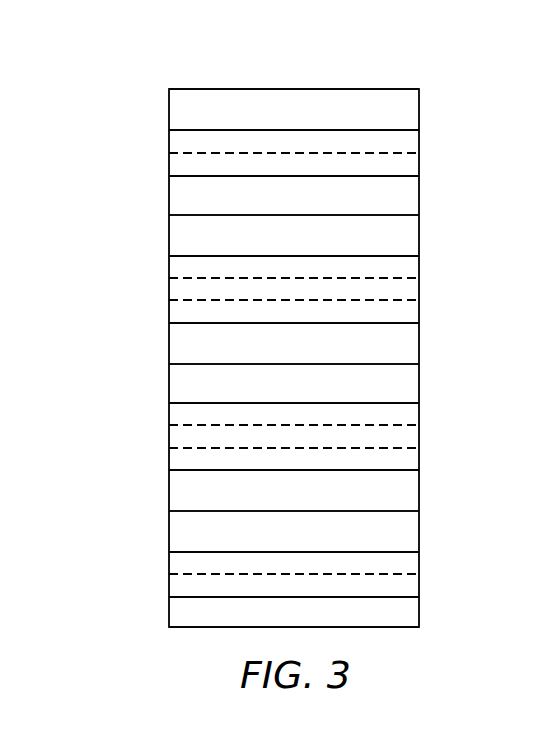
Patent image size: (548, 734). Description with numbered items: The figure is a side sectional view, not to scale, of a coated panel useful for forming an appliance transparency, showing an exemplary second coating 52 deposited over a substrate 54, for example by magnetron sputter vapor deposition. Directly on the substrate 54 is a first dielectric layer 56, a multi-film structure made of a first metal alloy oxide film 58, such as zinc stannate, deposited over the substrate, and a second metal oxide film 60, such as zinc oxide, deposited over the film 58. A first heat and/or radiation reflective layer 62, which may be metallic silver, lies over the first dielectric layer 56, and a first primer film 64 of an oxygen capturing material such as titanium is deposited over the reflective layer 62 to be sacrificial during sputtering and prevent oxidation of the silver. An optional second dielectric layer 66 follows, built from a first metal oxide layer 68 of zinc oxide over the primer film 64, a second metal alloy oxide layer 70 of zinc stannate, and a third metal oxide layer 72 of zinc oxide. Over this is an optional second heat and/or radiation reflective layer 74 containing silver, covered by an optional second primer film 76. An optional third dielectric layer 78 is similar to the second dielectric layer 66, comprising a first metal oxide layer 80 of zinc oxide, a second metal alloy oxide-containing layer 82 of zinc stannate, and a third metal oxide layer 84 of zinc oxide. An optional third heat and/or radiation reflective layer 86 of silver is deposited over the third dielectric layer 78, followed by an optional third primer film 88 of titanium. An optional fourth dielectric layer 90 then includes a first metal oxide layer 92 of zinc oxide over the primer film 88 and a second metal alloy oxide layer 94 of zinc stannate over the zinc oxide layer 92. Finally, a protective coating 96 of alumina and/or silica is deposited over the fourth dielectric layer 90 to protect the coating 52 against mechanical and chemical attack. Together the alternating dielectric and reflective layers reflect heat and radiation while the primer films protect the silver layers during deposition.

The second coating 52 is at (117, 90).
The substrate 54 is at (407, 612).
The first dielectric layer 56 is at (419, 552).
The first metal alloy oxide film 58 is at (168, 586).
The second metal oxide film 60 is at (168, 566).
The first heat and/or radiation reflective layer 62 is at (407, 536).
The first primer film 64 is at (407, 495).
The second dielectric layer 66 is at (419, 403).
The first metal oxide layer 68 is at (168, 459).
The second metal alloy oxide layer 70 is at (168, 436).
The third metal oxide layer 72 is at (168, 414).
The second heat and/or radiation reflective layer 74 is at (407, 386).
The second primer film 76 is at (407, 345).
The third dielectric layer 78 is at (419, 256).
The first metal oxide layer 80 is at (168, 311).
The second metal alloy oxide-containing layer 82 is at (168, 289).
The third metal oxide layer 84 is at (168, 269).
The third heat and/or radiation reflective layer 86 is at (407, 239).
The third primer film 88 is at (407, 196).
The fourth dielectric layer 90 is at (419, 130).
The first metal oxide layer 92 is at (168, 163).
The second metal alloy oxide layer 94 is at (168, 143).
The protective coating 96 is at (407, 108).